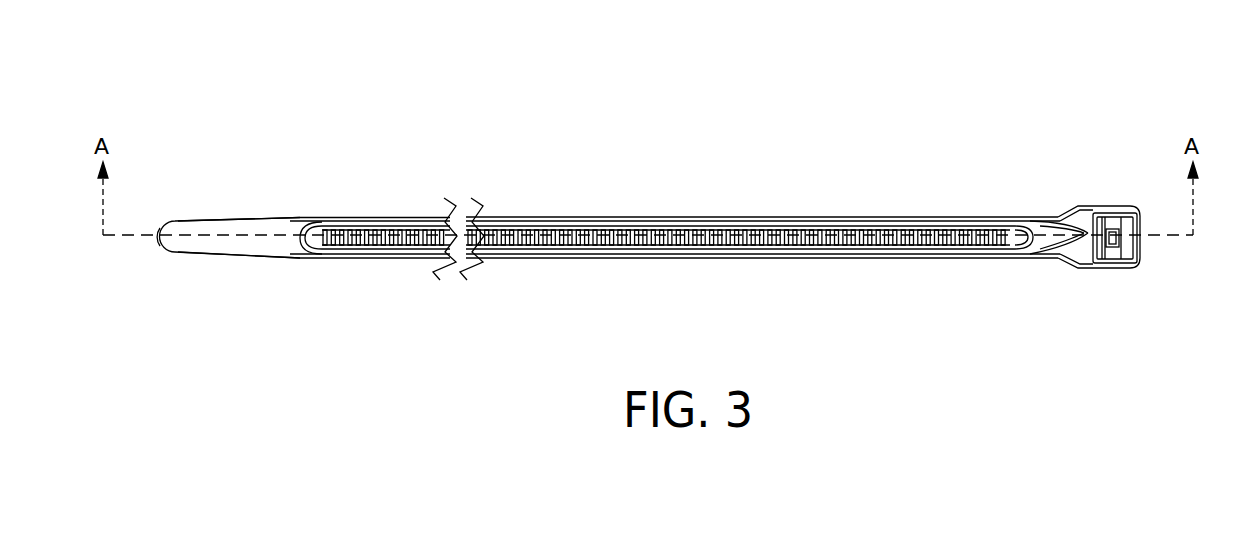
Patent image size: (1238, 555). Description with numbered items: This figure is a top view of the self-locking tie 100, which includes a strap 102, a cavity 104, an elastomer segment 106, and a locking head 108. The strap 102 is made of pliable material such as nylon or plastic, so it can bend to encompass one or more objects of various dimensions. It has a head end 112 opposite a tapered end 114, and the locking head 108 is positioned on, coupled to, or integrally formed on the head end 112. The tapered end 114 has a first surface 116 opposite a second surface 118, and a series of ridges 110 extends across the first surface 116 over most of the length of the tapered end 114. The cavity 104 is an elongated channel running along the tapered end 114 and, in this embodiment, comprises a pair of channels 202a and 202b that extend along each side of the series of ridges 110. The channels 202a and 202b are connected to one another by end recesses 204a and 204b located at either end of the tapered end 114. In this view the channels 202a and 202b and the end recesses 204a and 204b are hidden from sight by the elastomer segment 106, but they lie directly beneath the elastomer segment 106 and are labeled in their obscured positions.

The self-locking tie 100 is at (360, 128).
The strap 102 is at (700, 216).
The cavity 104 is at (1040, 248).
The elastomer segment 106 is at (1033, 227).
The locking head 108 is at (1107, 268).
The series of ridges 110 is at (608, 217).
The head end 112 is at (1040, 222).
The tapered end 114 is at (192, 247).
The first surface 116 is at (275, 227).
The second surface 118 is at (246, 266).
The channel 202a is at (797, 217).
The channel 202b is at (740, 262).
The end recess 204a is at (1047, 254).
The end recess 204b is at (308, 217).